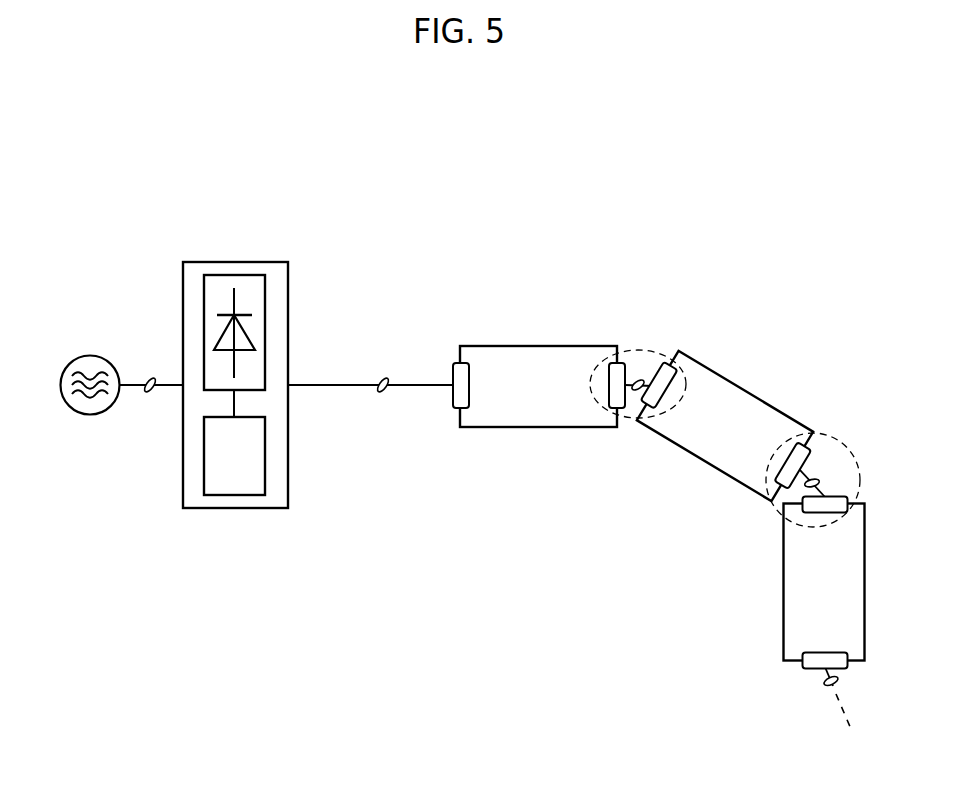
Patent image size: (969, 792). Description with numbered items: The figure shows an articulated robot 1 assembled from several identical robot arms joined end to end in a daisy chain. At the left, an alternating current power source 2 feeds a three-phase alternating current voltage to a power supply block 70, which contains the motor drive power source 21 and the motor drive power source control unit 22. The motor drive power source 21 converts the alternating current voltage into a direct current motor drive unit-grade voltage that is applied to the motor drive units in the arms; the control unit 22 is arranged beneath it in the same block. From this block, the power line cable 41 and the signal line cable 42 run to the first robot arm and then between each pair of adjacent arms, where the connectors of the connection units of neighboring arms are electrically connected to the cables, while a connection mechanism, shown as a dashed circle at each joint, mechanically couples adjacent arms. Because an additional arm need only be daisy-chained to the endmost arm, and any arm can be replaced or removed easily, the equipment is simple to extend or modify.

The articulated robot 1 is at (322, 205).
The alternating current power source 2 is at (88, 355).
The power supply unit 70 is at (223, 260).
The motor drive power source 21 is at (204, 288).
The motor drive power source control unit 22 is at (204, 447).
The power line cable 41 is at (572, 515).
The signal line cable 42 is at (343, 383).